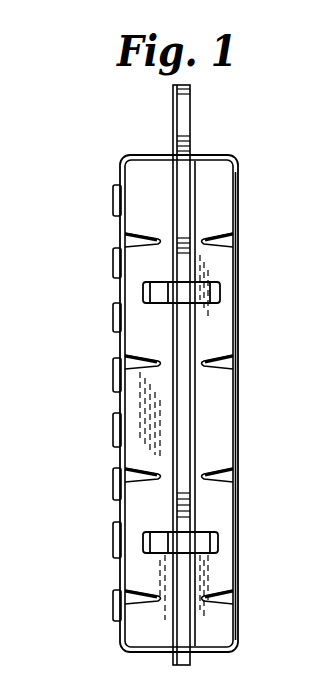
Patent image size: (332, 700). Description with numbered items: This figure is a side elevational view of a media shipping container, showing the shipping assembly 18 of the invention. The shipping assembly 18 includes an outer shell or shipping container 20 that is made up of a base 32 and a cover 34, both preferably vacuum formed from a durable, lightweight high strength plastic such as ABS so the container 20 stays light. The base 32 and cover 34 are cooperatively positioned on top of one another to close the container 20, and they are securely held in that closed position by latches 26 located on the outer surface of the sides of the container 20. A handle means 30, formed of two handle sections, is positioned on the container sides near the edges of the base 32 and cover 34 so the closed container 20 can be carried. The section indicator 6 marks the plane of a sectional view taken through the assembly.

The shipping assembly 18 is at (83, 196).
The shipping container 20 is at (219, 195).
The latches 26 is at (216, 293).
The handle means 30 is at (186, 112).
The base 32 is at (230, 340).
The cover 34 is at (112, 336).
The section line 6- 6 is at (110, 540).